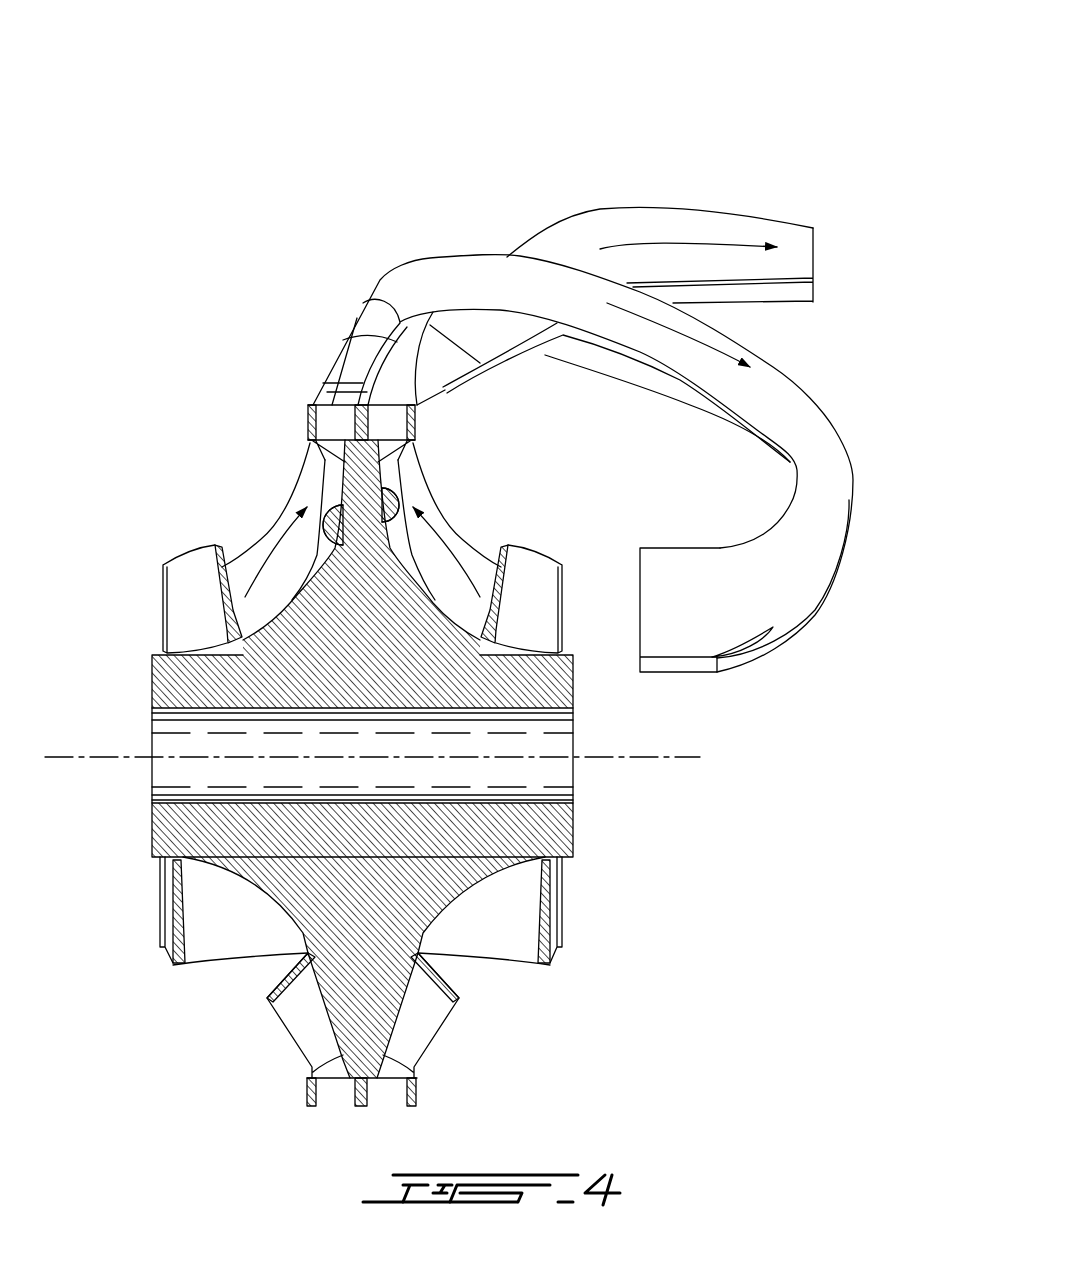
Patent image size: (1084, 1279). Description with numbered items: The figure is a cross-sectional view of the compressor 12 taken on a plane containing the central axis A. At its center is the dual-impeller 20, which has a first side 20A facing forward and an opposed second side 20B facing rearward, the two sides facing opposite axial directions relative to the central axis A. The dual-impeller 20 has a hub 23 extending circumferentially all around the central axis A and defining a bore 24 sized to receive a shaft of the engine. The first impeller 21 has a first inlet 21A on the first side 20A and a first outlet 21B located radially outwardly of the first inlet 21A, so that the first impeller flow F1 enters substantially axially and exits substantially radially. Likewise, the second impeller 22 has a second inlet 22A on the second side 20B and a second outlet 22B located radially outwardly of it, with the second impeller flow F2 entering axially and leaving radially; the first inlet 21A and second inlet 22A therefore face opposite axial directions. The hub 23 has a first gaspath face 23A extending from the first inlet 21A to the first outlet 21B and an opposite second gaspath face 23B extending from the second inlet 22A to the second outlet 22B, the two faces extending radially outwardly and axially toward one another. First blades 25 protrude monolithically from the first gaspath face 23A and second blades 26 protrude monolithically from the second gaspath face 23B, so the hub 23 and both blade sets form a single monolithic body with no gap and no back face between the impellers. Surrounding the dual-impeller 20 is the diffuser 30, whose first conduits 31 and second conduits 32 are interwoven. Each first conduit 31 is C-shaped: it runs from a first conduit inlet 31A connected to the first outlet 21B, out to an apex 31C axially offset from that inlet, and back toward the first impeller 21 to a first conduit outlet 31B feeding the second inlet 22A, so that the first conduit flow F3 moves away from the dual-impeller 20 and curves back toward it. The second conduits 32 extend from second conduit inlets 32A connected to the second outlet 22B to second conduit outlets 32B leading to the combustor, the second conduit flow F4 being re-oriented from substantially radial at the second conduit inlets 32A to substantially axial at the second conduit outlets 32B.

The compressor 12 is at (118, 212).
The dual-impeller 20 is at (108, 500).
The first side 20A is at (128, 687).
The second side 20B is at (598, 718).
The first impeller 21 is at (222, 580).
The first inlet 21A is at (130, 613).
The first outlet 21B is at (338, 425).
The second impeller 22 is at (527, 500).
The second inlet 22A is at (575, 600).
The second outlet 22B is at (392, 428).
The hub 23 is at (350, 840).
The first gaspath face 23A is at (342, 497).
The second gaspath face 23B is at (388, 492).
The bore 24 is at (507, 800).
The first blades 25 is at (210, 930).
The second blades 26 is at (503, 937).
The diffuser 30 is at (755, 138).
The first conduits 31 is at (445, 278).
The first conduit inlets 31A is at (335, 398).
The first conduit outlets 31B is at (640, 602).
The apexes 31C is at (852, 486).
The second conduits 32 is at (610, 232).
The second conduit inlets 32A is at (400, 405).
The second conduit outlets 32B is at (813, 250).
The central axis A is at (690, 762).
The first impeller flow F1 is at (283, 553).
The second impeller flow F2 is at (450, 560).
The first conduit flow F3 is at (710, 337).
The second conduit flow F4 is at (707, 247).